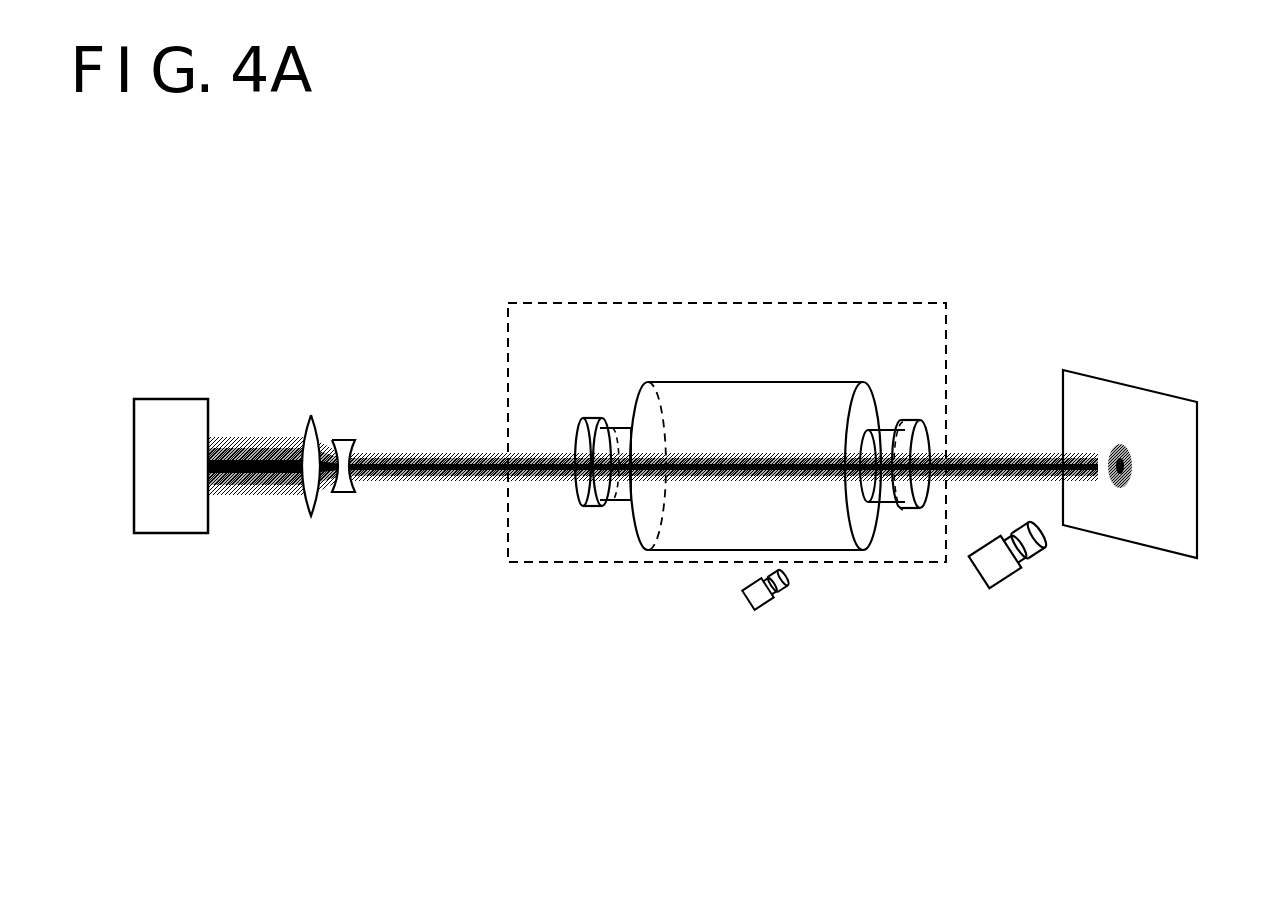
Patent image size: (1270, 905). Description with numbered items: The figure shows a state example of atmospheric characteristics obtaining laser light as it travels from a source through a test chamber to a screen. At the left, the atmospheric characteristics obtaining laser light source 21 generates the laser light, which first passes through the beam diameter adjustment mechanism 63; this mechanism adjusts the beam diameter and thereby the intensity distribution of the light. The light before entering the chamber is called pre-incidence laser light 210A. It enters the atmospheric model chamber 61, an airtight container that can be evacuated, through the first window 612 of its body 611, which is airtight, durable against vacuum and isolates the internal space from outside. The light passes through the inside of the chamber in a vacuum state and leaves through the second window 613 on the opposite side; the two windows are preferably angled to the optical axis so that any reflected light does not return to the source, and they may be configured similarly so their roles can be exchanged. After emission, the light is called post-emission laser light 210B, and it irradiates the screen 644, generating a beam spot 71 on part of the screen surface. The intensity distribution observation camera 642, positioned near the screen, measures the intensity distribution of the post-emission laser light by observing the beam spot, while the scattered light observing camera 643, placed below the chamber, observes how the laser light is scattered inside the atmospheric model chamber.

The atmospheric characteristics obtaining laser light source 21 is at (171, 466).
The beam diameter adjustment mechanism 63 is at (353, 412).
The atmospheric model chamber 61 is at (722, 302).
The body 611 is at (815, 382).
The first window 612 is at (583, 421).
The second window 613 is at (915, 418).
The pre-incidence laser light 210A is at (474, 482).
The post-emission laser light 210B is at (1030, 453).
The screen 644 is at (1198, 424).
The beam spot 71 is at (1132, 466).
The intensity distribution observation camera 642 is at (1018, 573).
The scattered light observing camera 643 is at (768, 603).